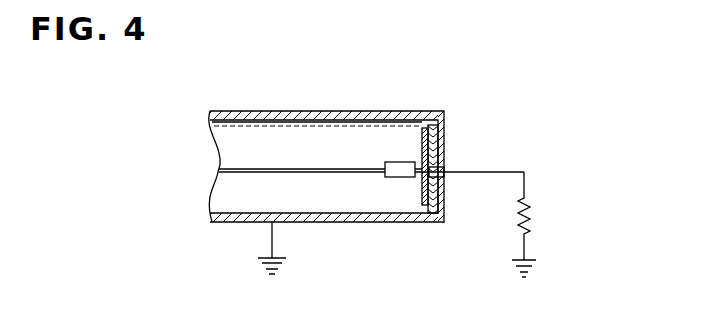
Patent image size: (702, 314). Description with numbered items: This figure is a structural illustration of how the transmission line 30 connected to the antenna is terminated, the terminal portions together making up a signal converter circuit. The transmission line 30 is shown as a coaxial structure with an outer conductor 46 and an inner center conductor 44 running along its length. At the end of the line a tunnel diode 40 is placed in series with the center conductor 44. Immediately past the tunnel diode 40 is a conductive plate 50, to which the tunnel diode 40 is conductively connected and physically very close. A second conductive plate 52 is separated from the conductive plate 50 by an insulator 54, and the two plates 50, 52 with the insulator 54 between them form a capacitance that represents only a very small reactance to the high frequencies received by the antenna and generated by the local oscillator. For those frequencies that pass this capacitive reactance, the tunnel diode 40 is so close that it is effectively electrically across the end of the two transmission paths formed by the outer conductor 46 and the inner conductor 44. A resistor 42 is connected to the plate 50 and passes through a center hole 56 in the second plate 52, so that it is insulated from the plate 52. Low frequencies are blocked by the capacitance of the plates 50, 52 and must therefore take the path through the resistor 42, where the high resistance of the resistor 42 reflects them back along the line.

The transmission line 30 is at (274, 109).
The tunnel diode 40 is at (401, 162).
The resistor 42 is at (528, 222).
The center conductor 44 is at (317, 173).
The outer conductor 46 is at (290, 124).
The conductive plate 50 is at (423, 132).
The second conductive plate 52 is at (437, 148).
The insulator 54 is at (432, 130).
The center hole 56 is at (444, 172).